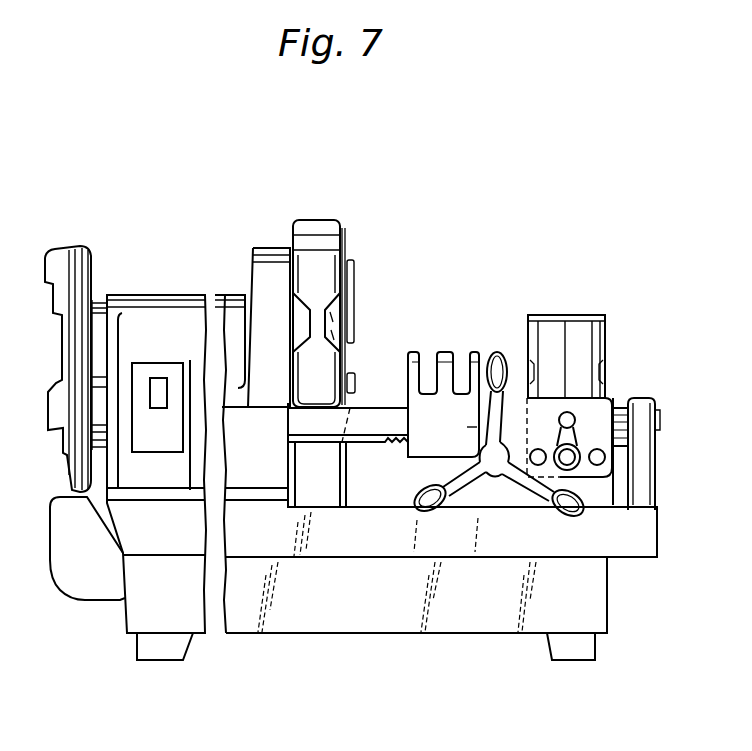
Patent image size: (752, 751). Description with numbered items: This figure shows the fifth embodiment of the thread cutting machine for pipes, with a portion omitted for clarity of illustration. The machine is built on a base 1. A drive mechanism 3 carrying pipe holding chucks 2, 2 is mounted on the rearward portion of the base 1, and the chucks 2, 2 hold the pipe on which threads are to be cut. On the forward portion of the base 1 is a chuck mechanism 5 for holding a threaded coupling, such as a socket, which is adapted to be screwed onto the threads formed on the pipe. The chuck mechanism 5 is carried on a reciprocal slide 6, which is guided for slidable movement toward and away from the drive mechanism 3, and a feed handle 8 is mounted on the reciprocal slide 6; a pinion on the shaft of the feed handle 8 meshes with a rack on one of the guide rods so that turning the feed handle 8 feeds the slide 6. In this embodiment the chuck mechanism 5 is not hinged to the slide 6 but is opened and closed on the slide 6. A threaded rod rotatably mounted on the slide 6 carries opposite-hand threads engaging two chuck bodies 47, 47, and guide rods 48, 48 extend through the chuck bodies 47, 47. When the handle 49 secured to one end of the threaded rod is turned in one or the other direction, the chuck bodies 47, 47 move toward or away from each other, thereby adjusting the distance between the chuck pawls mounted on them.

The base 1 is at (277, 623).
The pipe holding chuck 2 is at (83, 250).
The drive mechanism 3 is at (173, 300).
The chuck mechanism 5 is at (603, 385).
The reciprocal slide 6 is at (440, 447).
The feed handle 8 is at (485, 472).
The chuck body 47 is at (580, 343).
The guide rod 48 is at (540, 463).
The handle 49 is at (573, 425).